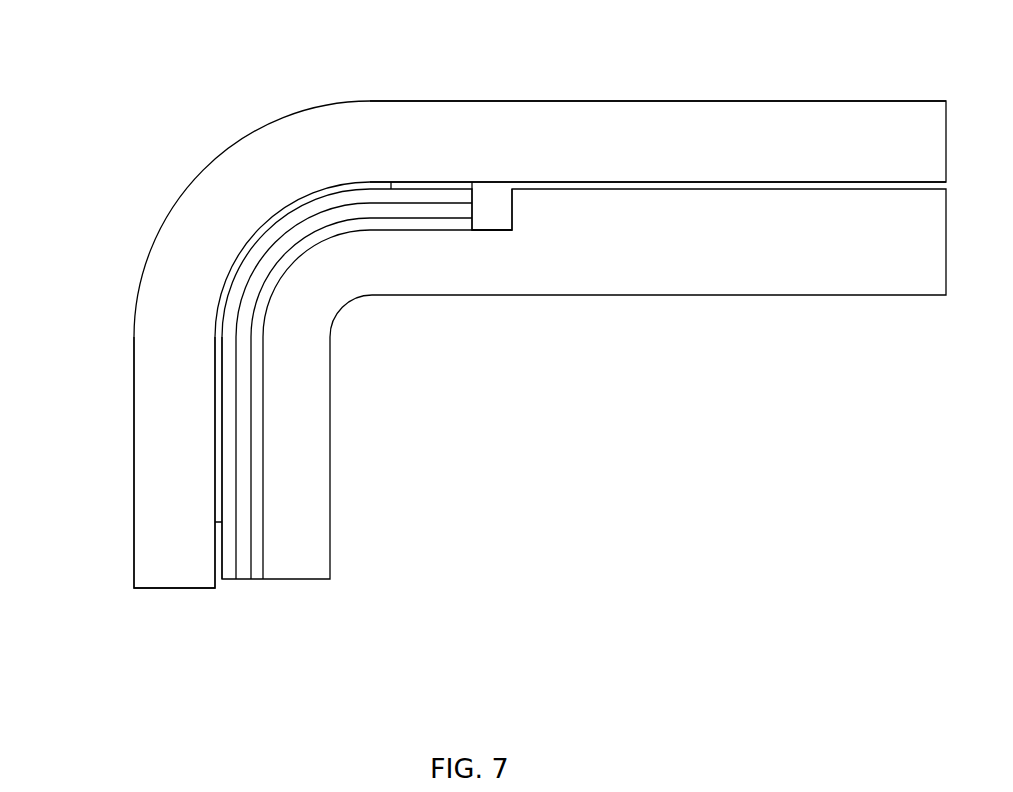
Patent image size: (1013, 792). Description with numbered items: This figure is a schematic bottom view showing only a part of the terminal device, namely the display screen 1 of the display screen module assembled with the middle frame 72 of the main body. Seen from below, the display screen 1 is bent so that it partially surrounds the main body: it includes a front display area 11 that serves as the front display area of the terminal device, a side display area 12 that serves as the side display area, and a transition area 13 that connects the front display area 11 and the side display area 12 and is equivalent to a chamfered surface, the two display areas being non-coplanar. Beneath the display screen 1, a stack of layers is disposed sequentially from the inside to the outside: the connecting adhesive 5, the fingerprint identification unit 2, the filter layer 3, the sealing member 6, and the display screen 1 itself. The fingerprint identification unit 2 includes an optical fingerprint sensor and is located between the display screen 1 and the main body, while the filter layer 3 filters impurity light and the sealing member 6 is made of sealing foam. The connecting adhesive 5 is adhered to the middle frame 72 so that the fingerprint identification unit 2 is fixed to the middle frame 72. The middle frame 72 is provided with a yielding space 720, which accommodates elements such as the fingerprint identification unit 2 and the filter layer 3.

The display screen 1 is at (487, 299).
The front display area 11 is at (597, 101).
The side display area 12 is at (135, 575).
The transition area 13 is at (231, 150).
The fingerprint identification unit 2 is at (242, 380).
The filter layer 3 is at (233, 440).
The connecting adhesive 5 is at (272, 297).
The sealing member 6 is at (220, 545).
The middle frame 72 is at (684, 232).
The yielding space 720 is at (492, 209).